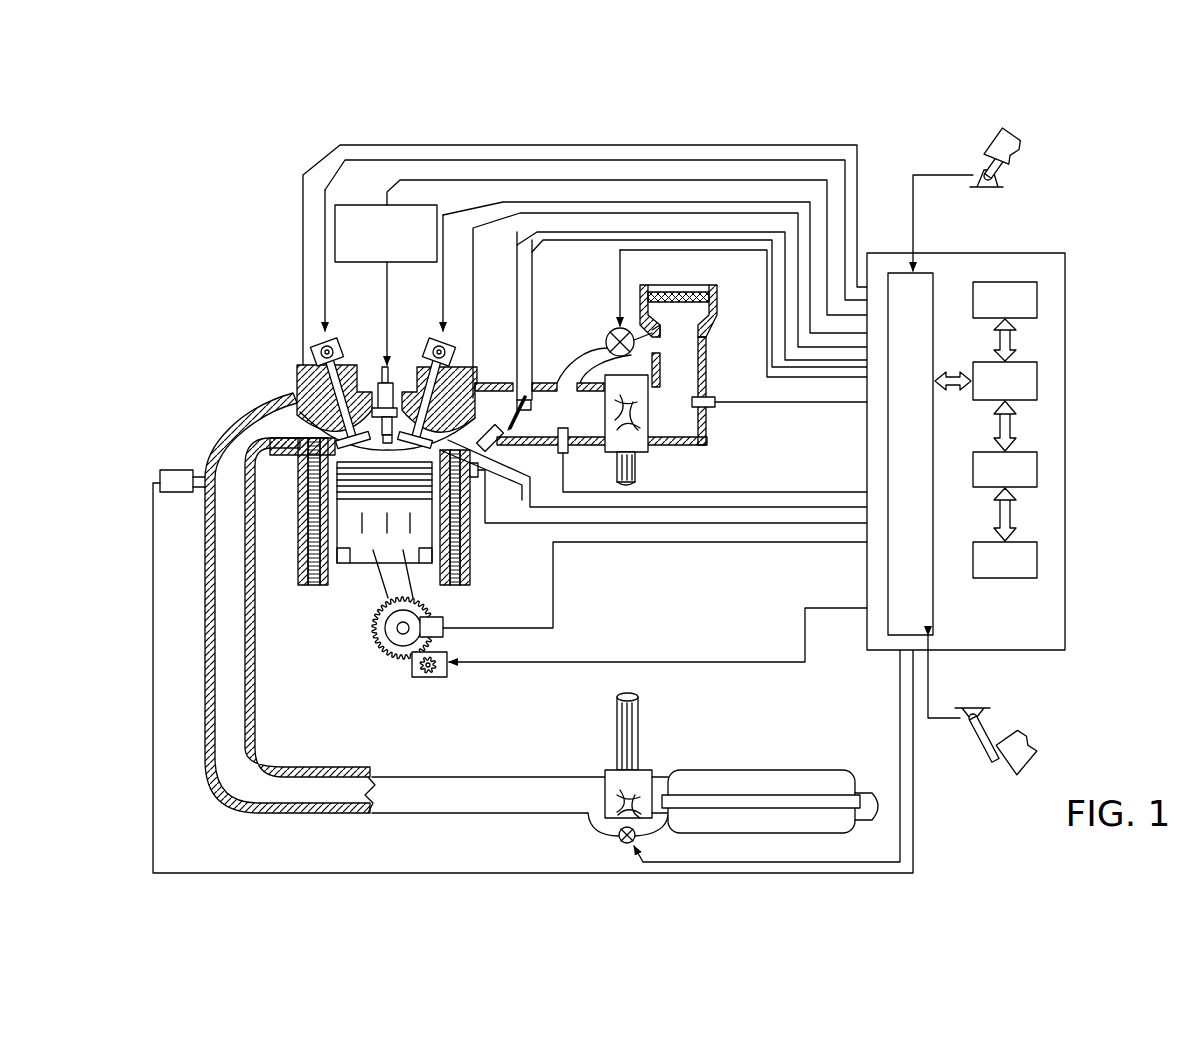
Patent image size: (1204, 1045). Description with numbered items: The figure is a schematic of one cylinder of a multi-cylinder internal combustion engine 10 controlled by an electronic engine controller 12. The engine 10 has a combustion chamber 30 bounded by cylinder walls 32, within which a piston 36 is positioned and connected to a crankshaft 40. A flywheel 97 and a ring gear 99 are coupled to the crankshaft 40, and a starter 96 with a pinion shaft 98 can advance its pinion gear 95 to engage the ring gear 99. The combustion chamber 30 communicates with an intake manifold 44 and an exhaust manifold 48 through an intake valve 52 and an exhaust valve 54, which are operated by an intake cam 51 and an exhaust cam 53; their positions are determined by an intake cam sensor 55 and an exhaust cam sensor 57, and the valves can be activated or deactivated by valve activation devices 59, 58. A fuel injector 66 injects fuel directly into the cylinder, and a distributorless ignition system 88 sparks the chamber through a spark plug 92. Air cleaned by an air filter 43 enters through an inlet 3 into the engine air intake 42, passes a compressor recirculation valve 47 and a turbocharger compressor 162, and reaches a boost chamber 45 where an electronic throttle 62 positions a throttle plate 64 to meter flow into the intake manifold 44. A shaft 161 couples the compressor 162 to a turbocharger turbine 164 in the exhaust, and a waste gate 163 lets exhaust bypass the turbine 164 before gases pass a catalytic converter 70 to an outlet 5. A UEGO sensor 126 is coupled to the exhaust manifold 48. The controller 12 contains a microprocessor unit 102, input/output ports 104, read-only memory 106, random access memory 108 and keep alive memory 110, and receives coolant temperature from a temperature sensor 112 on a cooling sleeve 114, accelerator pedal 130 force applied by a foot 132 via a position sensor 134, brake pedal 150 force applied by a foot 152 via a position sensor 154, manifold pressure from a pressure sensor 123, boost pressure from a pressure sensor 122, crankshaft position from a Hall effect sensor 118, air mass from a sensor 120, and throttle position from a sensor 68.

The inlet 3 is at (690, 284).
The outlet 5 is at (872, 782).
The internal combustion engine 10 is at (243, 324).
The electronic engine controller 12 is at (1065, 258).
The combustion chamber 30 is at (383, 452).
The cylinder walls 32 is at (300, 585).
The piston 36 is at (372, 540).
The crankshaft 40 is at (393, 648).
The engine air intake 42 is at (600, 297).
The air filter 43 is at (690, 302).
The intake manifold 44 is at (477, 418).
The boost chamber 45 is at (563, 422).
The compressor recirculation valve 47 is at (608, 330).
The exhaust manifold 48 is at (279, 430).
The intake cam 51 is at (437, 337).
The intake valve 52 is at (420, 430).
The exhaust cam 53 is at (332, 337).
The exhaust valve 54 is at (340, 440).
The intake cam sensor 55 is at (452, 345).
The exhaust cam sensor 57 is at (312, 348).
The valve activation device 58 is at (334, 352).
The valve activation device 59 is at (433, 352).
The electronic throttle 62 is at (522, 405).
The throttle plate 64 is at (514, 428).
The fuel injector 66 is at (480, 470).
The throttle position sensor 68 is at (528, 400).
The catalytic converter 70 is at (705, 770).
The distributorless ignition system 88 is at (350, 205).
The spark plug 92 is at (393, 372).
The pinion gear 95 is at (432, 672).
The starter 96 is at (445, 677).
The flywheel 97 is at (383, 634).
The pinion shaft 98 is at (420, 672).
The ring gear 99 is at (395, 660).
The microprocessor unit 102 is at (1037, 383).
The input/output ports 104 is at (935, 275).
The read-only memory 106 is at (1037, 297).
The random access memory 108 is at (1037, 470).
The keep alive memory 110 is at (1037, 560).
The temperature sensor 112 is at (495, 492).
The cooling sleeve 114 is at (460, 540).
The Hall effect sensor 118 is at (443, 617).
The air mass sensor 120 is at (714, 398).
The pressure sensor 122 is at (565, 452).
The pressure sensor 123 is at (505, 447).
The Universal Exhaust Gas Oxygen sensor 126 is at (160, 477).
The accelerator pedal 130 is at (972, 155).
The foot 132 is at (1018, 148).
The position sensor 134 is at (1000, 180).
The brake pedal 150 is at (988, 758).
The foot 152 is at (1025, 735).
The position sensor 154 is at (965, 714).
The shaft 161 is at (636, 460).
The turbocharger compressor 162 is at (645, 440).
The waste gate 163 is at (619, 840).
The turbocharger turbine 164 is at (608, 770).